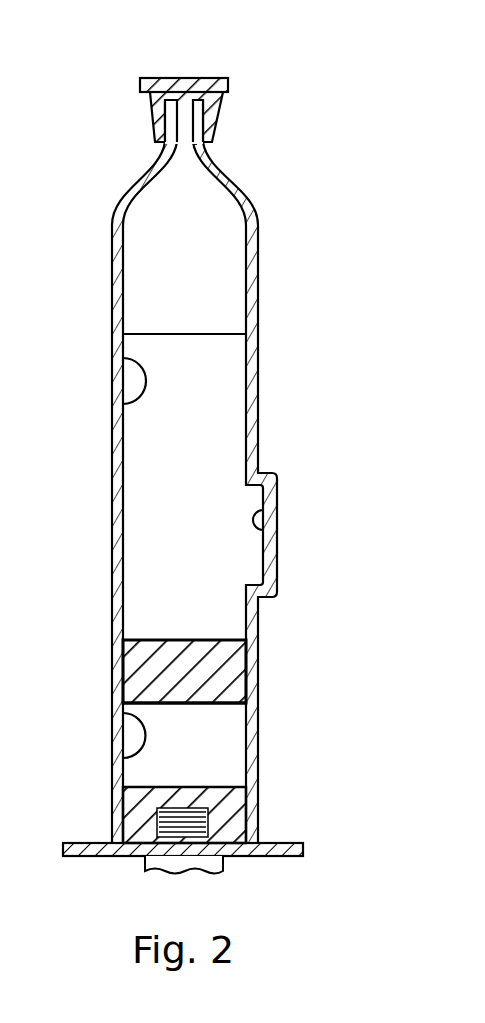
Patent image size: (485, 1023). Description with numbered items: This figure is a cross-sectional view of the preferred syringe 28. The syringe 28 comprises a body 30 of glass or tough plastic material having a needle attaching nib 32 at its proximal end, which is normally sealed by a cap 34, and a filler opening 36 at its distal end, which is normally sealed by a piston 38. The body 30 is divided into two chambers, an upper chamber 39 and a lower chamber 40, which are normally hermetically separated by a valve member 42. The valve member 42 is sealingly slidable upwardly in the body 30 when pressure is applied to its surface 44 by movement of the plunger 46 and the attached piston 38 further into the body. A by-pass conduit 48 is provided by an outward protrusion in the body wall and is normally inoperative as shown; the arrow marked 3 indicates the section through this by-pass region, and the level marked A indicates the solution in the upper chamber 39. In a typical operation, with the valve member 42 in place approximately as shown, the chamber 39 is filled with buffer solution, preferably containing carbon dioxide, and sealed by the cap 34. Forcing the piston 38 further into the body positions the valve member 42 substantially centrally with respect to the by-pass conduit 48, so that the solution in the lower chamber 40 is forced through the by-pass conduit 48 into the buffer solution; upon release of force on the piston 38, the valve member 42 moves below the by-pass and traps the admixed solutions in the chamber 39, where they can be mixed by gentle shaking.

The syringe 28 is at (284, 356).
The body 30 is at (112, 494).
The needle attaching nib 32 is at (200, 170).
The cap 34 is at (167, 78).
The liquid level A is at (157, 334).
The chamber 39 is at (118, 404).
The by-pass conduit 48 is at (265, 498).
The section line 3 is at (305, 522).
The valve member 42 is at (142, 670).
The surface 44 is at (218, 704).
The chamber 40 is at (118, 760).
The piston 38 is at (238, 818).
The filler opening 36 is at (132, 851).
The plunger 46 is at (225, 860).